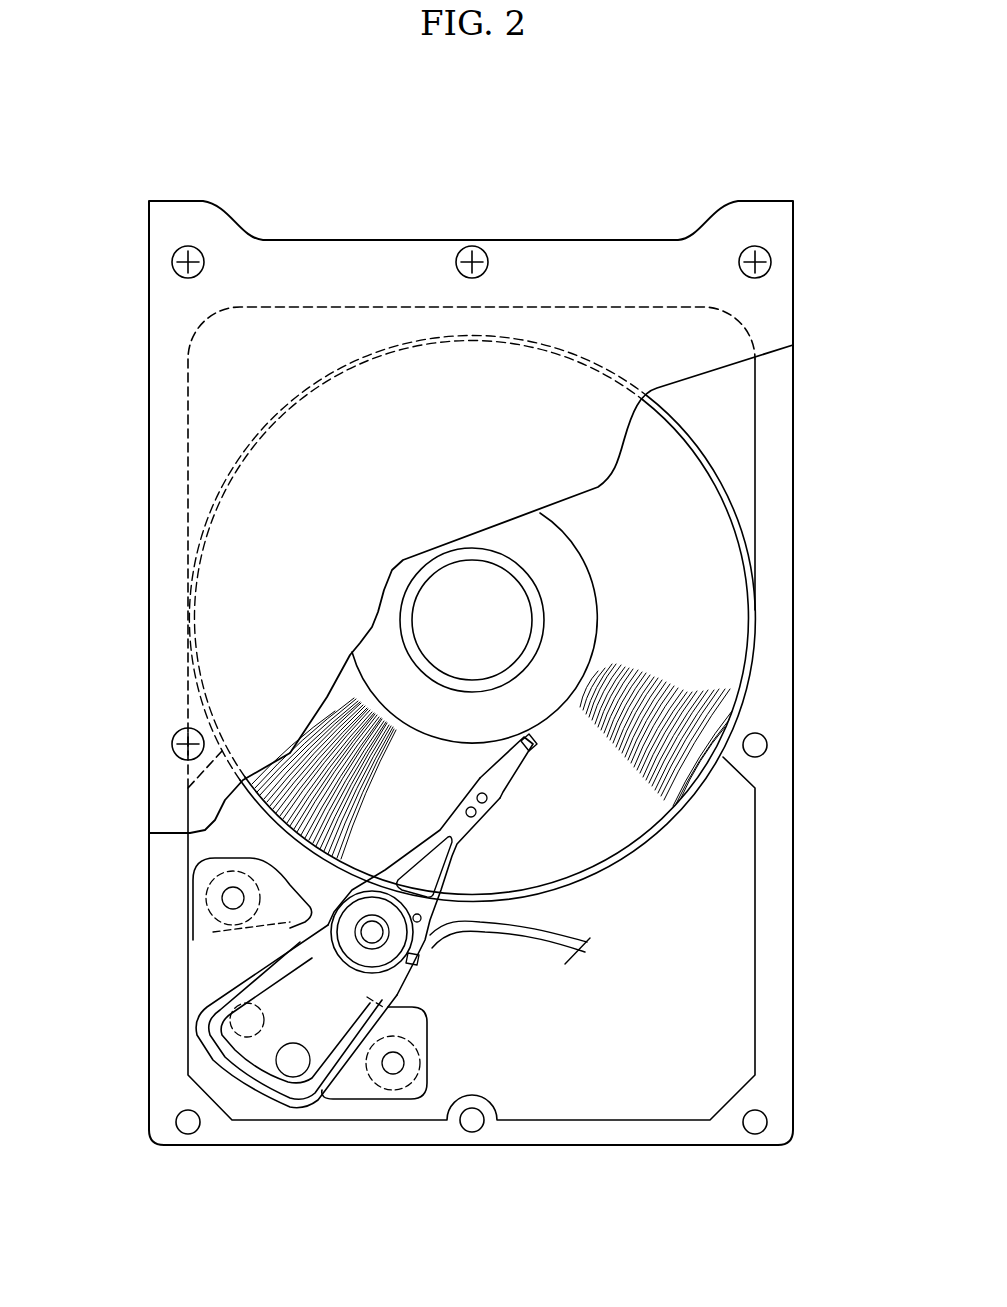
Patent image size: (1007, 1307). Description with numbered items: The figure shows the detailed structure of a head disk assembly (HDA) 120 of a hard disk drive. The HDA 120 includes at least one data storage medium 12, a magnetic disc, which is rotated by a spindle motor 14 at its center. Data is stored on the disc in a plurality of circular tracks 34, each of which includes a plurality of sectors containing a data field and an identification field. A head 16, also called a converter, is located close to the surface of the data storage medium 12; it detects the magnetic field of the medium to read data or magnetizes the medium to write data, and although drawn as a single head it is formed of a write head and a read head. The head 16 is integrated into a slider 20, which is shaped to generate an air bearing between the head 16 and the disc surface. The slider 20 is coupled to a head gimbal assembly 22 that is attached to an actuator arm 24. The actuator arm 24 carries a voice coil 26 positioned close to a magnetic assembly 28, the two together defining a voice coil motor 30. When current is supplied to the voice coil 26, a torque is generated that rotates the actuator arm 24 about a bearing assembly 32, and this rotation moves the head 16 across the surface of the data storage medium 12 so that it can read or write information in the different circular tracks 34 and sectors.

The head disk assembly 120 is at (597, 175).
The data storage medium 12 is at (712, 558).
The spindle motor 14 is at (450, 598).
The head 16 is at (530, 746).
The slider 20 is at (470, 868).
The head gimbal assembly 22 is at (510, 778).
The actuator arm 24 is at (290, 952).
The voice coil 26 is at (217, 1017).
The magnetic assembly 28 is at (232, 965).
The voice coil motor 30 is at (343, 1080).
The bearing assembly 32 is at (380, 942).
The circular tracks 34 is at (340, 740).